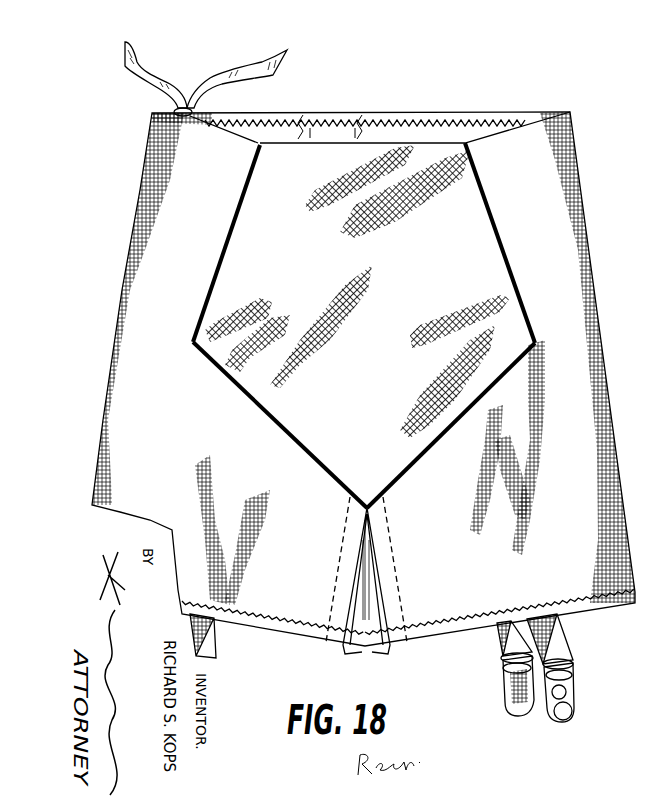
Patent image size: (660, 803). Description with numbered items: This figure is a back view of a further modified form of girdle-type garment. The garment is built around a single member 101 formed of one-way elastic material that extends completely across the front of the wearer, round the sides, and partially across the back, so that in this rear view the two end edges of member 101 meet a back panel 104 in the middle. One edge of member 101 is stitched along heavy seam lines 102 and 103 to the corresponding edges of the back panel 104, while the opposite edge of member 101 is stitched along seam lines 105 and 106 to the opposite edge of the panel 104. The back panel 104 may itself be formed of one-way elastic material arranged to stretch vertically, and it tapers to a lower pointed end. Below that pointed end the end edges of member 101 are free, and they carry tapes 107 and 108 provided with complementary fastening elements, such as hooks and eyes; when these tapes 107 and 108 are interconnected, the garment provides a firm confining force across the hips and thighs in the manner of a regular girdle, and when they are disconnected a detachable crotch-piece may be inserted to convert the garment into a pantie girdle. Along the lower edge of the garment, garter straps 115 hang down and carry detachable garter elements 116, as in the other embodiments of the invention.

The member 101 is at (155, 232).
The seam line 102 is at (497, 236).
The seam line 103 is at (434, 446).
The back panel 104 is at (320, 158).
The seam line 105 is at (232, 241).
The seam line 106 is at (305, 442).
The tape 107 is at (402, 587).
The tape 108 is at (332, 581).
The garter straps 115 is at (222, 638).
The detachable garter elements 116 is at (572, 690).